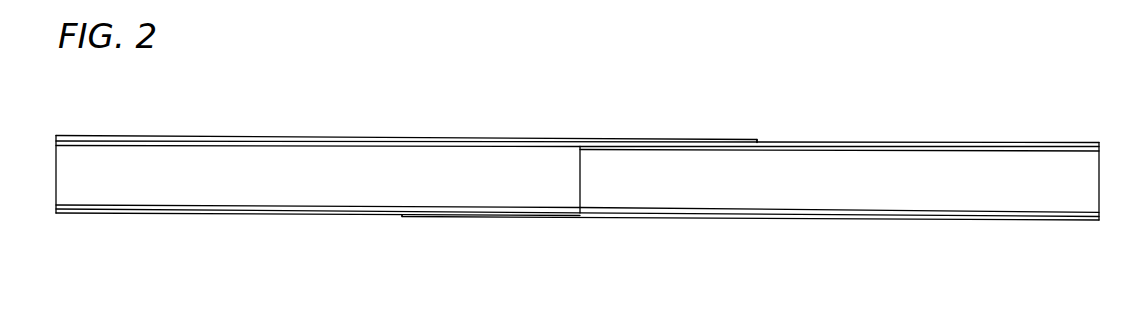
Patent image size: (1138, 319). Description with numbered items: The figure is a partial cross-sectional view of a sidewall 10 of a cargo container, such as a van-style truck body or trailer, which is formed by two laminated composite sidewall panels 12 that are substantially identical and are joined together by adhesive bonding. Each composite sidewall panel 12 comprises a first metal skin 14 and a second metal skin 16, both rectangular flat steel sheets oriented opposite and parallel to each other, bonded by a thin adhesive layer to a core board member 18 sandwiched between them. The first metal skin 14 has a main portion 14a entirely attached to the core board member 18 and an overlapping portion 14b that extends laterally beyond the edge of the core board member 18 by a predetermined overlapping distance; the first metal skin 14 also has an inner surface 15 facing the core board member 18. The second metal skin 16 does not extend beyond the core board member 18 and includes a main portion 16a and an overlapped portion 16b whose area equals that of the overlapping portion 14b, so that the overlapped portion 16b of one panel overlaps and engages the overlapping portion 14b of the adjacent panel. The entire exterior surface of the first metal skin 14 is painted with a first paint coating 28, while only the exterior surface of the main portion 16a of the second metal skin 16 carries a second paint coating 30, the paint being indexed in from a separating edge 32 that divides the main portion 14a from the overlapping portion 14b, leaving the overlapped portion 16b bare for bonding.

The sidewall 10 is at (772, 78).
The composite sidewall panel 12 is at (197, 132).
The first metal skin 14 is at (645, 222).
The main portion of the first metal skin 14a is at (353, 138).
The overlapping portion of the first metal skin 14b is at (686, 140).
The inner surface of the first metal skin 15 is at (445, 213).
The second metal skin 16 is at (1005, 142).
The main portion of the second metal skin 16a is at (927, 142).
The overlapped portion of the second metal skin 16b is at (613, 139).
The core board member 18 is at (76, 188).
The first paint coating 28 is at (483, 139).
The second paint coating 30 is at (862, 142).
The separating edge 32 is at (757, 140).